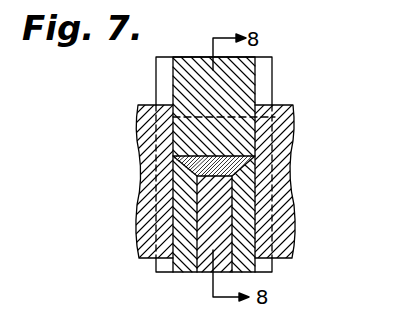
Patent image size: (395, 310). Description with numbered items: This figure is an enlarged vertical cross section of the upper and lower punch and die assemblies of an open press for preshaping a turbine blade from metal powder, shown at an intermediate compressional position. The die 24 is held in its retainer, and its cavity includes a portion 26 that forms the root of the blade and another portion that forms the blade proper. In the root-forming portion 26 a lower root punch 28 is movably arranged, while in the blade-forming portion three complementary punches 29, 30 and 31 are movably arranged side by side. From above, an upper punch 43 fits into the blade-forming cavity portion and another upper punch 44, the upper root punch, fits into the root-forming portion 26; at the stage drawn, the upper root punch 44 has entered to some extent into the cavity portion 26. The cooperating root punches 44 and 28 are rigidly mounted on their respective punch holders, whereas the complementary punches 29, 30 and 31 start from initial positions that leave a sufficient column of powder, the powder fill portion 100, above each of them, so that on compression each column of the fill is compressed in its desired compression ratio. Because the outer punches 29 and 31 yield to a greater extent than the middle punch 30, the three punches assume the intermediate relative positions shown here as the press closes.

The die 24 is at (278, 178).
The portion of the die cavity 26 is at (256, 135).
The punch 28 is at (262, 203).
The complementary punch 29 is at (173, 228).
The complementary punch 30 is at (220, 253).
The complementary punch 31 is at (240, 232).
The punch 43 is at (182, 80).
The punch 44 is at (263, 83).
The powder fill portion 100 is at (175, 165).